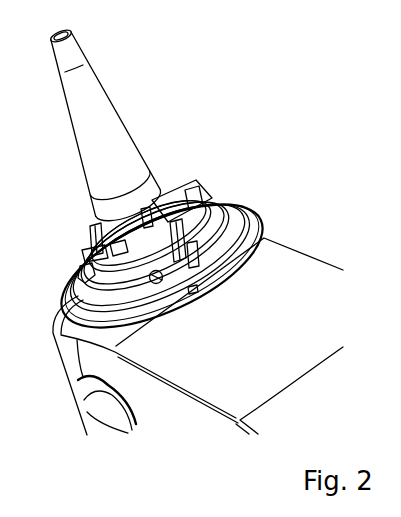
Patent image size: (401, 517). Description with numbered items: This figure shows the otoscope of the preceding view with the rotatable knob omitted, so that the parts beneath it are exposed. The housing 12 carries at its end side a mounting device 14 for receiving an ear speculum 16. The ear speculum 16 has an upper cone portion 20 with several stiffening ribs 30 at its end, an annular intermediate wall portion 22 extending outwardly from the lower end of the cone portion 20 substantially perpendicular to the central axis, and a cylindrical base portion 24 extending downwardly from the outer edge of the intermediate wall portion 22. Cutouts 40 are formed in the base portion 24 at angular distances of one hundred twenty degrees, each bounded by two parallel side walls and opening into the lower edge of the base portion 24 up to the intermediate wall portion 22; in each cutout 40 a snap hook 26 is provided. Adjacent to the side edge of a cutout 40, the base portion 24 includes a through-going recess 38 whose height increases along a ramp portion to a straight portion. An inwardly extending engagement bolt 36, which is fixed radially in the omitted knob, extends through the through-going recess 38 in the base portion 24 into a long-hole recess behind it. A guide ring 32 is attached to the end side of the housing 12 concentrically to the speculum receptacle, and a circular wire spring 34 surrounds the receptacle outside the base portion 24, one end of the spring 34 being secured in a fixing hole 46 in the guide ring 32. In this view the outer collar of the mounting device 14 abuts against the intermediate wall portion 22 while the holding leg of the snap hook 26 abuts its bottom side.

The housing 12 is at (318, 253).
The mounting device 14 is at (219, 212).
The ear speculum 16 is at (101, 78).
The cone portion 20 is at (110, 112).
The intermediate wall portion 22 is at (191, 198).
The base portion 24 is at (203, 227).
The snap hook 26 is at (186, 258).
The stiffening ribs 30 is at (95, 245).
The guide ring 32 is at (238, 257).
The circular wire spring 34 is at (229, 220).
The engagement bolt 36 is at (87, 280).
The through-going recess 38 is at (152, 273).
The cutout 40 is at (168, 235).
The fixing hole 46 is at (190, 252).